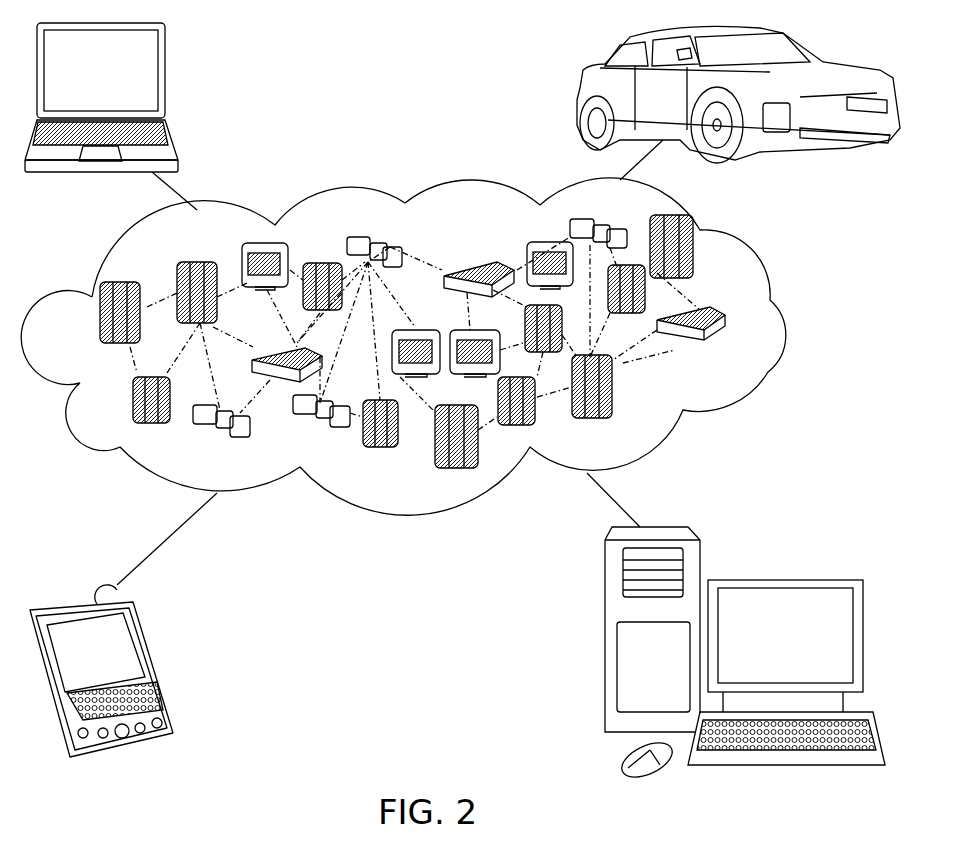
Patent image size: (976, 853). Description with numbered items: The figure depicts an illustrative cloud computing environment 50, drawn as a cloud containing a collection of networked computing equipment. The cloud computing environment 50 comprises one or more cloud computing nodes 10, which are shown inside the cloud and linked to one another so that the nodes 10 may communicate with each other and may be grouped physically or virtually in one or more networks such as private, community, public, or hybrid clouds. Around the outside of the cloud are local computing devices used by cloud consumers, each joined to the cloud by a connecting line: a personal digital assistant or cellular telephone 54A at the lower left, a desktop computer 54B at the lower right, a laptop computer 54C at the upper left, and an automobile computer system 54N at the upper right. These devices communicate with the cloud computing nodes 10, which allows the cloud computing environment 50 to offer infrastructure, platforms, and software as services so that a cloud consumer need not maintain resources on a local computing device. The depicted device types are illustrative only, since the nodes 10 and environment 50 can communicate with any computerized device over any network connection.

The cloud computing node 10 is at (728, 347).
The cloud computing environment 50 is at (782, 322).
The personal digital assistant or cellular telephone 54A is at (160, 655).
The desktop computer 54B is at (782, 578).
The laptop computer 54C is at (163, 78).
The automobile computer system 54N is at (573, 90).